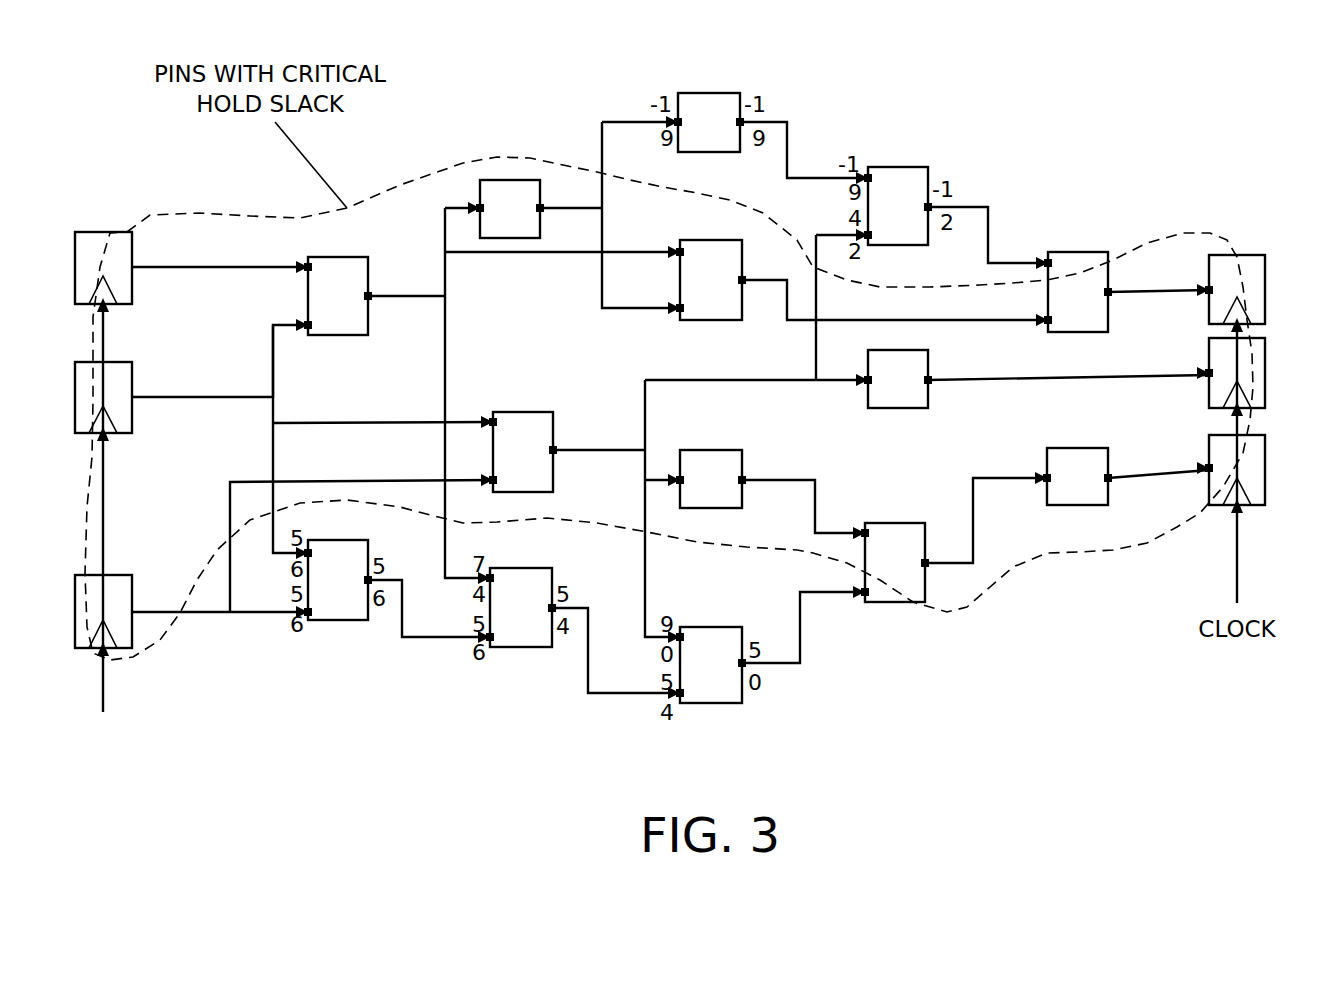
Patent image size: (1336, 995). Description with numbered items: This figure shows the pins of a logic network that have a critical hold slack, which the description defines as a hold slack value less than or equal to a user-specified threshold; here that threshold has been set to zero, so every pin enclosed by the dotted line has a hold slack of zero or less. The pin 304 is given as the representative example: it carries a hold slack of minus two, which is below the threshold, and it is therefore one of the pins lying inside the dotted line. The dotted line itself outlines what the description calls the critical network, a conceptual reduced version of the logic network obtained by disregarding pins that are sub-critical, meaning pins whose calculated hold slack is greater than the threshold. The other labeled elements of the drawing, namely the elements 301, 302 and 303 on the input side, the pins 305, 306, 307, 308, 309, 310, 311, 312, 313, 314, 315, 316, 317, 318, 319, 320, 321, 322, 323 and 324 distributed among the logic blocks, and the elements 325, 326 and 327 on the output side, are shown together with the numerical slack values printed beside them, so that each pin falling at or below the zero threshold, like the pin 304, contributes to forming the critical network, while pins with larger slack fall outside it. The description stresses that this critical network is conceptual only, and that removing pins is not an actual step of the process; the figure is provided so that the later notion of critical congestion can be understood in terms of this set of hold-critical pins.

The launching flip-flop 301 is at (130, 267).
The launching flip-flop 302 is at (130, 397).
The launching flip-flop 303 is at (130, 612).
The pin 304 is at (308, 265).
The gate input pin 305 is at (310, 325).
The gate output pin 306 is at (368, 296).
The gate input pin 307 is at (494, 421).
The gate input pin 308 is at (492, 480).
The gate output pin 309 is at (554, 450).
The gate input pin 310 is at (481, 208).
The gate output pin 311 is at (540, 208).
The gate input pin 312 is at (680, 252).
The gate input pin 313 is at (682, 308).
The gate output pin 314 is at (742, 280).
The gate input pin 315 is at (680, 480).
The gate output pin 316 is at (742, 480).
The gate input pin 317 is at (865, 533).
The gate output pin 318 is at (925, 563).
The gate input pin 319 is at (868, 381).
The gate output pin 320 is at (928, 381).
The gate input pin 321 is at (1048, 320).
The gate output pin 322 is at (1108, 292).
The gate input pin 323 is at (1047, 478).
The gate output pin 324 is at (1108, 478).
The capturing flip-flop 325 is at (1210, 290).
The capturing flip-flop 326 is at (1210, 373).
The capturing flip-flop 327 is at (1210, 468).